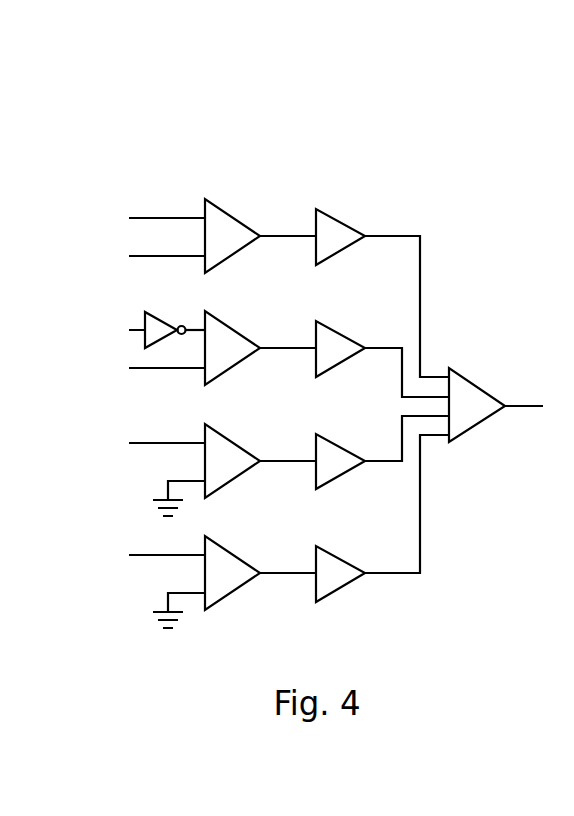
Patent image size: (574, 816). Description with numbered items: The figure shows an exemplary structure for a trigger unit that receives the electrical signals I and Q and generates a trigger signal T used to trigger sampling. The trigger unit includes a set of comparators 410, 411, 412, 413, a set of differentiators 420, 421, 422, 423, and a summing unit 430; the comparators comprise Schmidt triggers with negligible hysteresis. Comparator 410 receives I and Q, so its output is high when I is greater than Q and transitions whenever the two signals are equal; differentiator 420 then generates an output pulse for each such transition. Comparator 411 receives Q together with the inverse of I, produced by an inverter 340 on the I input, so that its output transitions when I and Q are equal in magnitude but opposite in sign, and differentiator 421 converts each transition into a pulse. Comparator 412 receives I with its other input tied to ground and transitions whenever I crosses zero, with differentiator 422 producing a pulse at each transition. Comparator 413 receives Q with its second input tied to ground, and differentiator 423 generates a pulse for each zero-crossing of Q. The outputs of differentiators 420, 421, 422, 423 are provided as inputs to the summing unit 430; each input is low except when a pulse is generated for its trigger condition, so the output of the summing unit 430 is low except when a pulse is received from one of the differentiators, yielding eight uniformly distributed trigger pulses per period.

The inverter 340 is at (161, 320).
The comparator 410 is at (242, 216).
The comparator 411 is at (242, 328).
The comparator 412 is at (242, 441).
The comparator 413 is at (242, 553).
The differentiator 420 is at (347, 222).
The differentiator 421 is at (347, 334).
The differentiator 422 is at (338, 445).
The differentiator 423 is at (343, 559).
The summing unit 430 is at (477, 386).